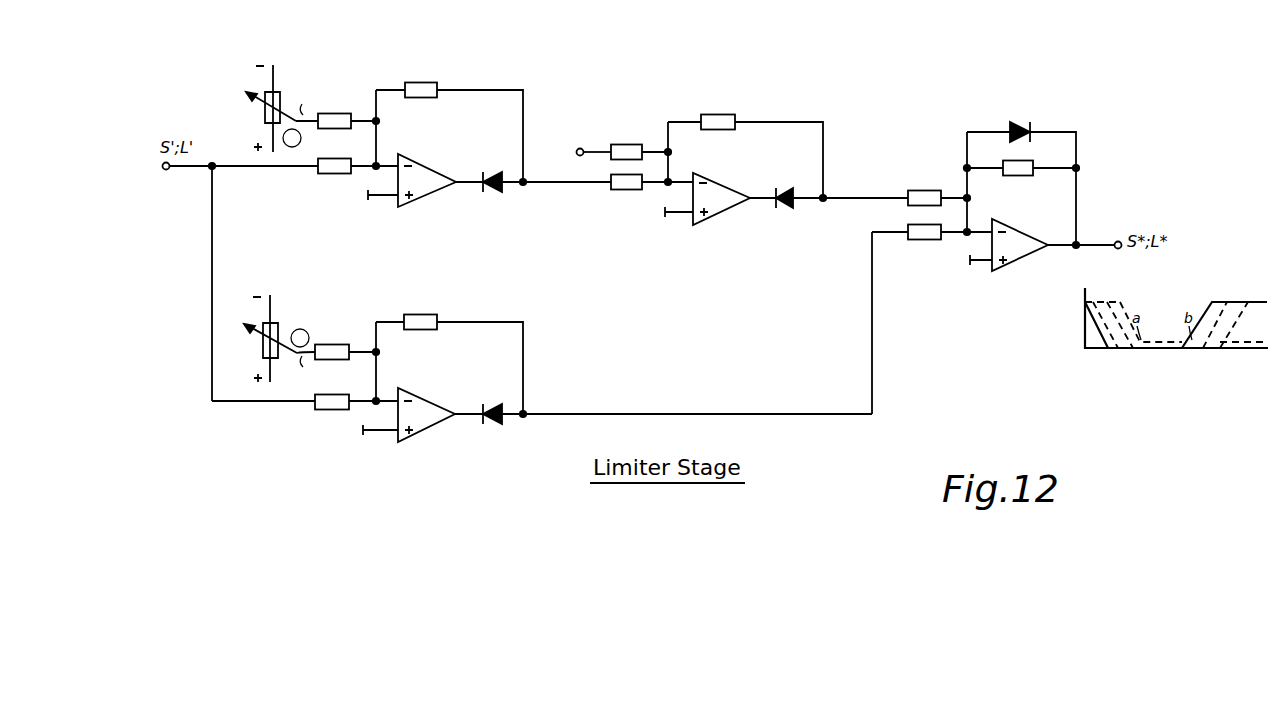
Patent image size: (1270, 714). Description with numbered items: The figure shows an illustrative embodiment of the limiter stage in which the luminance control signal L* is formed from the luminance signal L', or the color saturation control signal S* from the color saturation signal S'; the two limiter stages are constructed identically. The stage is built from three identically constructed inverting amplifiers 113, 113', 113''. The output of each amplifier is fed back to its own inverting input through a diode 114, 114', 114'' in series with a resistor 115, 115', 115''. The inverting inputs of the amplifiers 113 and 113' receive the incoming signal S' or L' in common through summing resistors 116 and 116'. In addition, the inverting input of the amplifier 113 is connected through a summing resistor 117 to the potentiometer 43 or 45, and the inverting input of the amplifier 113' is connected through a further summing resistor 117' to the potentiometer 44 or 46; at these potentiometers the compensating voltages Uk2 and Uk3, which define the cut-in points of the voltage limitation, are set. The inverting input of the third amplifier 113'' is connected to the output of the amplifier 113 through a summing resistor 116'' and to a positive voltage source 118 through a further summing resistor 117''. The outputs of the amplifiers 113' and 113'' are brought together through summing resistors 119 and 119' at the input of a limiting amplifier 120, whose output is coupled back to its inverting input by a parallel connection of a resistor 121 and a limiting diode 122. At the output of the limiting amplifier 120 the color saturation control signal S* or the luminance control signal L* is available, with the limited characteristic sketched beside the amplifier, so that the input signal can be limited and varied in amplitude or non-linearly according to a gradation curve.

The potentiometer 43 is at (248, 108).
The potentiometer 45 is at (264, 118).
The potentiometer 44 is at (285, 329).
The potentiometer 46 is at (277, 325).
The inverting amplifier 113 is at (414, 170).
The inverting amplifier 113' is at (414, 405).
The inverting amplifier 113'' is at (709, 212).
The diode 114 is at (492, 202).
The diode 114' is at (506, 432).
The diode 114'' is at (801, 217).
The resistor 115 is at (430, 68).
The resistor 115' is at (428, 302).
The resistor 115'' is at (729, 95).
The summing resistor 116 is at (326, 187).
The summing resistor 116' is at (329, 422).
The summing resistor 116'' is at (622, 206).
The summing resistor 117 is at (340, 93).
The summing resistor 117' is at (335, 334).
The summing resistor 117'' is at (636, 125).
The positive voltage source 118 is at (579, 148).
The summing resistor 119 is at (922, 256).
The summing resistor 119' is at (918, 180).
The limiting amplifier 120 is at (1020, 252).
The resistor 121 is at (1017, 172).
The limiting diode 122 is at (1022, 125).